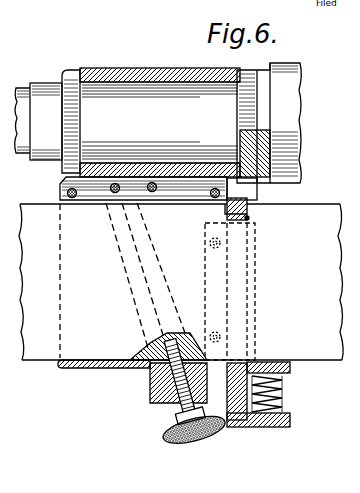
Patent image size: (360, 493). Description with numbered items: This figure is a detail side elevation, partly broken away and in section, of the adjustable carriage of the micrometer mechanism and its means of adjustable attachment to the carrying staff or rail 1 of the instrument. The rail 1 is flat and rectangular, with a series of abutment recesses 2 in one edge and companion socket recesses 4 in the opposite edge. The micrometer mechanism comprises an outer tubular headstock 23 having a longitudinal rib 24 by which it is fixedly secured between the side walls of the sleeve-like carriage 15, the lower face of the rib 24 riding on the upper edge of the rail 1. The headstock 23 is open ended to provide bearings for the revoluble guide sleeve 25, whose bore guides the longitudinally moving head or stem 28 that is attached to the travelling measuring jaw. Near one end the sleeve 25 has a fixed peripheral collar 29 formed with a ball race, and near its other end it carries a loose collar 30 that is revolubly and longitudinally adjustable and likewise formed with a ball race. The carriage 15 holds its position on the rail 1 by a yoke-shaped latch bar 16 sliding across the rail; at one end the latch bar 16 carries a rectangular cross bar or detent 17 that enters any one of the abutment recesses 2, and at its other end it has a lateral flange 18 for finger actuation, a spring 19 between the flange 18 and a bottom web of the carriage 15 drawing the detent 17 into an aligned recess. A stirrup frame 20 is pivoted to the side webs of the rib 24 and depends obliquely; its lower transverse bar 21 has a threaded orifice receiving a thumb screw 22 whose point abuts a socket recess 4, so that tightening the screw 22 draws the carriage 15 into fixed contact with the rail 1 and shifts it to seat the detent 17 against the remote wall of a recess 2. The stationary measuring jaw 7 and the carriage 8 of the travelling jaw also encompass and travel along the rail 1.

The carrying staff or rail 1 is at (181, 282).
The abutment recesses 2 is at (226, 212).
The socket recesses 4 is at (181, 320).
The measuring jaw 7 is at (116, 135).
The carriage 8 is at (263, 452).
The carriage 15 is at (73, 372).
The latch bar 16 is at (238, 249).
The cross bar or detent 17 is at (250, 218).
The lateral head or flange 18 is at (290, 422).
The spring 19 is at (282, 393).
The stirrup frame 20 is at (138, 296).
The lower transverse bar 21 is at (160, 385).
The thumb screw 22 is at (170, 424).
The headstock 23 is at (164, 82).
The longitudinal rib 24 is at (93, 200).
The revoluble guide sleeve 25 is at (160, 122).
The head or stem 28 is at (24, 120).
The fixed peripheral collar 29 is at (53, 82).
The loose collar 30 is at (269, 123).